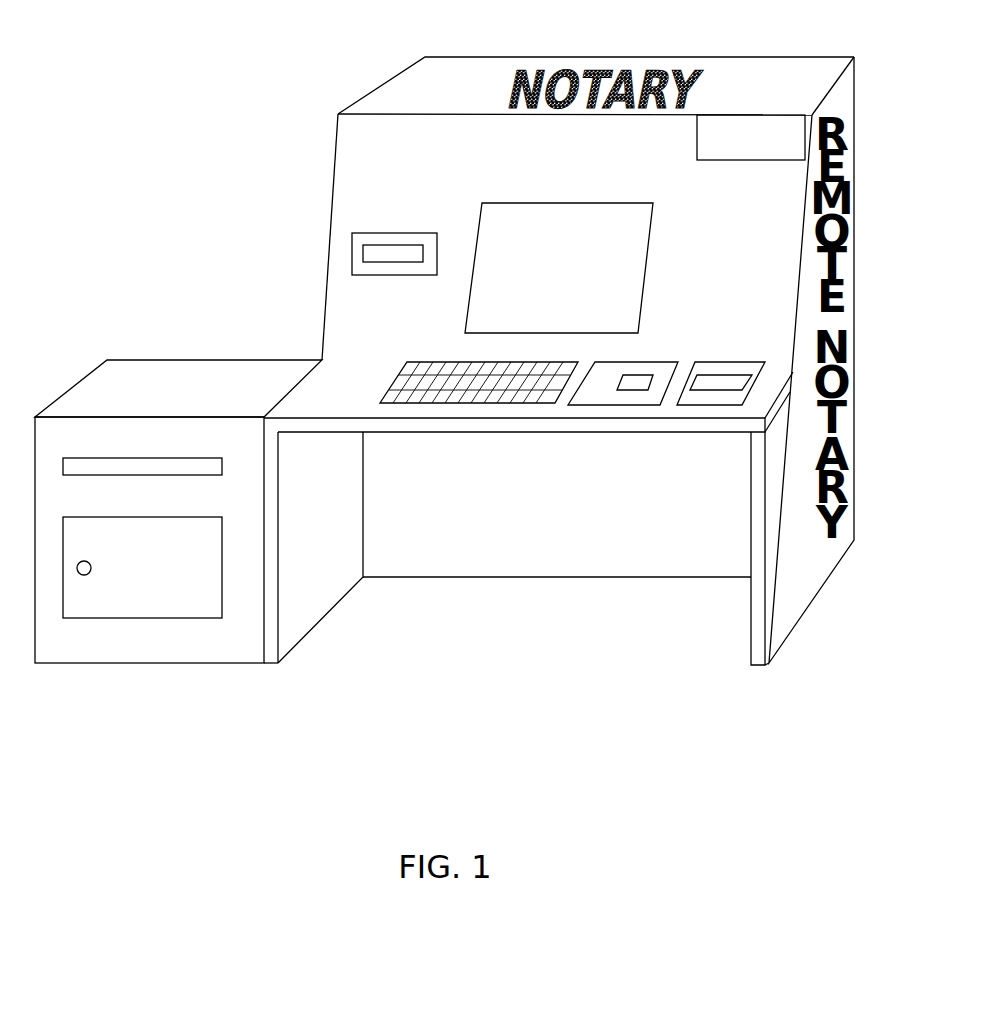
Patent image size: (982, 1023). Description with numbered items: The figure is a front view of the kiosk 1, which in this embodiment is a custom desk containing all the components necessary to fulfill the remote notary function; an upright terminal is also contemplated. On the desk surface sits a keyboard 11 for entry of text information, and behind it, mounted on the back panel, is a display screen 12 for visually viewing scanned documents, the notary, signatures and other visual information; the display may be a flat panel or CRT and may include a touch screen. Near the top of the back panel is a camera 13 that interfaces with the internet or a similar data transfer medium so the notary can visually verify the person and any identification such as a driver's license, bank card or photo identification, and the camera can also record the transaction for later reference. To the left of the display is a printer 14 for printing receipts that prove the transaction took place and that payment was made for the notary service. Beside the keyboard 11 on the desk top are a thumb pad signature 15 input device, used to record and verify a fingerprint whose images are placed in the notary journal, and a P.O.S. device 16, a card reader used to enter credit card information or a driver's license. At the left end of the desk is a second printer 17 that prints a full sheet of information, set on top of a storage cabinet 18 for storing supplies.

The kiosk 1 is at (268, 46).
The keyboard 11 is at (407, 403).
The display screen 12 is at (502, 200).
The camera 13 is at (758, 110).
The printer 14 is at (350, 252).
The thumb pad signature input device 15 is at (623, 405).
The P.O.S. device 16 is at (717, 405).
The printer 17 is at (130, 457).
The storage cabinet 18 is at (172, 618).